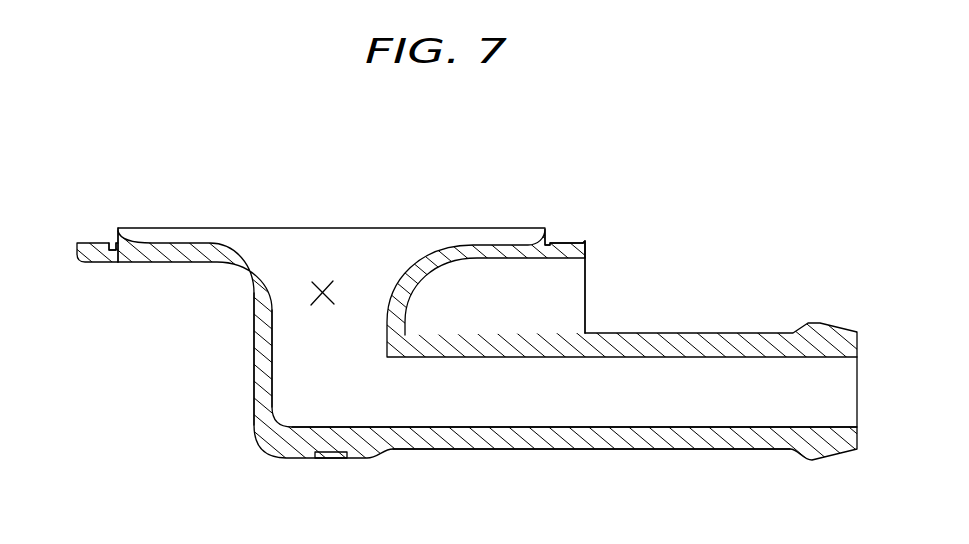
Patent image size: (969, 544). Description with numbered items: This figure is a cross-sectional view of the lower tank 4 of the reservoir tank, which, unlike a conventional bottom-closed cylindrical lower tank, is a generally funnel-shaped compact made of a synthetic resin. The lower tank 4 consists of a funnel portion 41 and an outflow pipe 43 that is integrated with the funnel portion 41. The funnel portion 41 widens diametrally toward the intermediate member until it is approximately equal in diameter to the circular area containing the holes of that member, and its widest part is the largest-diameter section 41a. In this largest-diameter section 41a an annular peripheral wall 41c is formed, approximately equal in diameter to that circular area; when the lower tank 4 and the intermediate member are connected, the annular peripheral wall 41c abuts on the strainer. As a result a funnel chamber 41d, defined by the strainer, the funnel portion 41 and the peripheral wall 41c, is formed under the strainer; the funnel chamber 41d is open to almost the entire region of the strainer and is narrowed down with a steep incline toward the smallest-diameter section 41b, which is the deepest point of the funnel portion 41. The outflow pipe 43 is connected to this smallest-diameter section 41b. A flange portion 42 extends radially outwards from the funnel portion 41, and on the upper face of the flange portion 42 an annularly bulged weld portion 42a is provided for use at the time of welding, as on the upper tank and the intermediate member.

The lower tank 4 is at (485, 208).
The funnel portion 41 is at (413, 278).
The largest-diameter section 41a is at (121, 252).
The smallest-diameter section 41b is at (263, 357).
The annular peripheral wall 41c is at (118, 228).
The funnel chamber 41d is at (318, 287).
The flange portion 42 is at (588, 250).
The weld portion 42a is at (587, 242).
The outflow pipe 43 is at (565, 436).